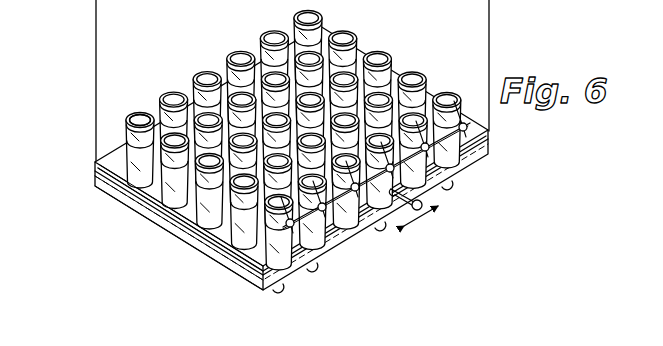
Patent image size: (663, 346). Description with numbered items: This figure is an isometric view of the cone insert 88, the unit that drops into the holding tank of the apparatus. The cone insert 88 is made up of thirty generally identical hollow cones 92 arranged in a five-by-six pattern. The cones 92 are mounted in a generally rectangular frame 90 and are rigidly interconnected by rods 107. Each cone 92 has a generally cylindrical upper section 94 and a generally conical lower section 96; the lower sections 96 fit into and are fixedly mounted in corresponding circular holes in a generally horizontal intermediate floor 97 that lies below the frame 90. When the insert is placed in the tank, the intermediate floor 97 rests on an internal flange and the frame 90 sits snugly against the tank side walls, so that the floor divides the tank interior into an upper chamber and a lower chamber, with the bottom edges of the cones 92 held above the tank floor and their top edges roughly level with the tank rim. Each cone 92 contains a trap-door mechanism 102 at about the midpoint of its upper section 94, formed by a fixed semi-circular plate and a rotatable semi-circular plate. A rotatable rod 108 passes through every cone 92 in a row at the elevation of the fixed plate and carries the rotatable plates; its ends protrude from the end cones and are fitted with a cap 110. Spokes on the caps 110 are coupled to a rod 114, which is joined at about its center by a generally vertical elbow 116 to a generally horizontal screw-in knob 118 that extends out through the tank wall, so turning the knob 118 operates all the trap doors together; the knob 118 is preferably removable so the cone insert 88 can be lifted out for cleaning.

The cone insert 88 is at (328, 159).
The rectangular frame 90 is at (486, 142).
The hollow cone 92 is at (120, 118).
The upper section 94 is at (254, 141).
The lower section 96 is at (128, 208).
The intermediate floor 97 is at (112, 189).
The trap-door mechanism 102 is at (143, 116).
The rod 107 is at (222, 268).
The rotatable rod 108 is at (187, 230).
The cap 110 is at (290, 240).
The rod 114 is at (313, 232).
The elbow 116 is at (379, 208).
The screw-in knob 118 is at (423, 203).